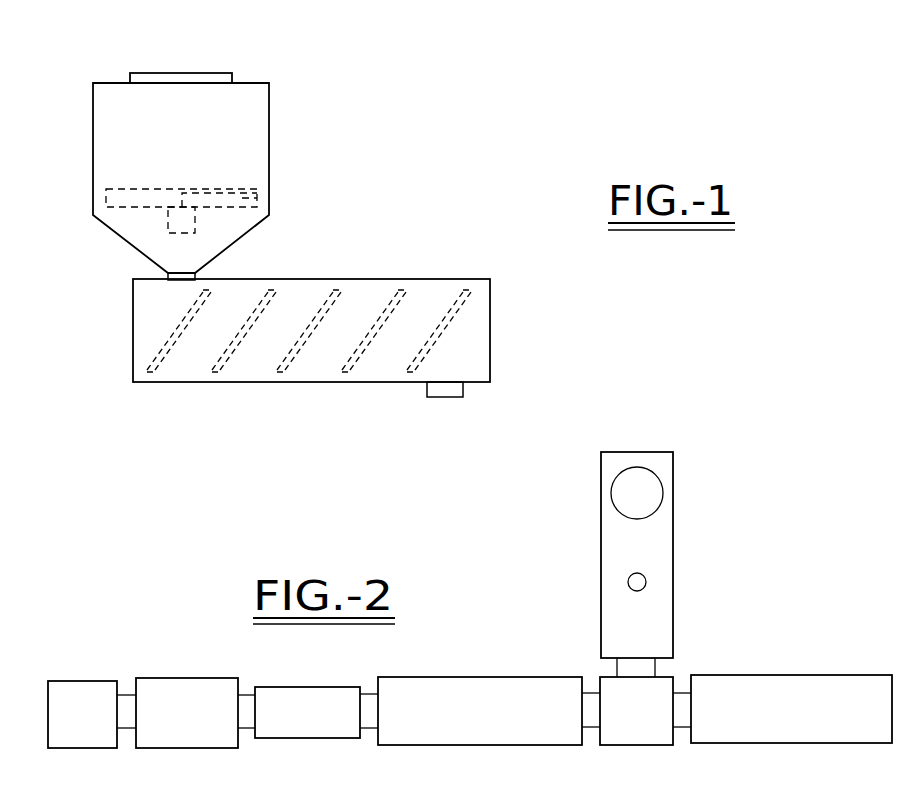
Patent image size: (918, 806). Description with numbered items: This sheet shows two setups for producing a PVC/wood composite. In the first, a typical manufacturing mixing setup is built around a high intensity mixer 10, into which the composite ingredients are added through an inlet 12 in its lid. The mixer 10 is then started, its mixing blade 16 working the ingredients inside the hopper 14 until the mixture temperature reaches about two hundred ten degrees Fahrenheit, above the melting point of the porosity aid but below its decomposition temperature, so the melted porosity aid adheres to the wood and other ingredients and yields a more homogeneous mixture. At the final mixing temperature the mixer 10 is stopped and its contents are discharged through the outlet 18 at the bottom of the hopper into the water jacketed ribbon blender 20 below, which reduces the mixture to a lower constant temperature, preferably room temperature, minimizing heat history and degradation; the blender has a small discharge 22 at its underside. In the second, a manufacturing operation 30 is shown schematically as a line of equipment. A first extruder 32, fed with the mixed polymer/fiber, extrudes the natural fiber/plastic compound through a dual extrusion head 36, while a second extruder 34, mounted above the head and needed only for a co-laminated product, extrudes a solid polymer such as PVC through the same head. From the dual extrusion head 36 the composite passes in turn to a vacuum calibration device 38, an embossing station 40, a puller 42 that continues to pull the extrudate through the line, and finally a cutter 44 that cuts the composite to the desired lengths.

In FIG. 1, the high intensity mixer 10 is at (330, 124).
In FIG. 1, the inlet 12 is at (202, 72).
In FIG. 1, the hopper 14 is at (269, 160).
In FIG. 1, the mixing blade 16 is at (269, 195).
In FIG. 1, the outlet 18 is at (195, 275).
In FIG. 1, the water jacketed ribbon blender 20 is at (490, 320).
In FIG. 1, the outlet 22 is at (427, 395).
In FIG. 2, the manufacturing operation 30 is at (734, 548).
In FIG. 2, the first extruder 32 is at (785, 743).
In FIG. 2, the second extruder 34 is at (673, 597).
In FIG. 2, the dual extrusion head 36 is at (633, 745).
In FIG. 2, the vacuum calibration device 38 is at (472, 745).
In FIG. 2, the embossing station 40 is at (293, 738).
In FIG. 2, the puller 42 is at (182, 748).
In FIG. 2, the cutter 44 is at (70, 748).